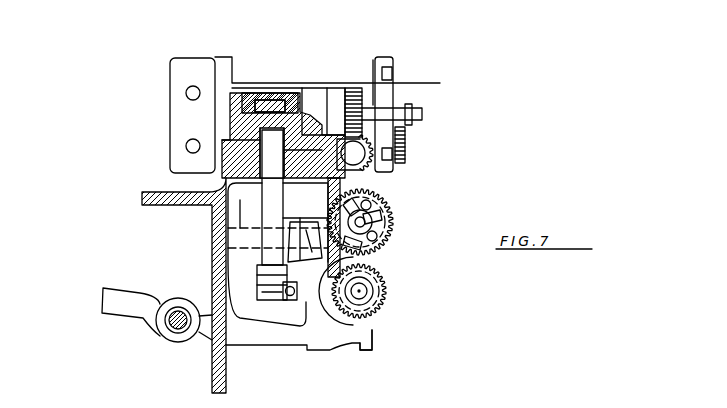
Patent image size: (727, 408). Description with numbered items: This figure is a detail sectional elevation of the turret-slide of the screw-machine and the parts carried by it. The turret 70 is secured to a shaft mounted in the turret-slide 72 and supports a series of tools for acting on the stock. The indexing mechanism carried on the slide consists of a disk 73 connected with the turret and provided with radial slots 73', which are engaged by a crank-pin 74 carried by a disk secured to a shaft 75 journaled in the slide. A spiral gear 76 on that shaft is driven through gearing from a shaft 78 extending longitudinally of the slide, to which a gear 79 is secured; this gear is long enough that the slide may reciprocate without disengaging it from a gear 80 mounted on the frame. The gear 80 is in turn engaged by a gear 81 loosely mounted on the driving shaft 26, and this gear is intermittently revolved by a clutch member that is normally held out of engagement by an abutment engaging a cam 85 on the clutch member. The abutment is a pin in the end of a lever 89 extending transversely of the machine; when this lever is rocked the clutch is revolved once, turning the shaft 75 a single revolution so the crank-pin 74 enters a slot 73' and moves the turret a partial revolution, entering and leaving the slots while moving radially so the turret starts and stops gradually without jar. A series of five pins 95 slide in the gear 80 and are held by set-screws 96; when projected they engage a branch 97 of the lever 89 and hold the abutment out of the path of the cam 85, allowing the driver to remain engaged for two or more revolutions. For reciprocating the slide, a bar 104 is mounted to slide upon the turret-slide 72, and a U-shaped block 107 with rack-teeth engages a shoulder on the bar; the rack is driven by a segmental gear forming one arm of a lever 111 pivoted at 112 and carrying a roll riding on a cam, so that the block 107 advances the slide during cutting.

The turret 70 is at (193, 72).
The turret-slide 72 is at (220, 180).
The disk 73 is at (395, 104).
The radial slots 73' is at (411, 111).
The crank-pin 74 is at (388, 116).
The shaft 75 is at (374, 60).
The spiral gear 76 is at (360, 88).
The shaft 78 is at (372, 166).
The gear 79 is at (375, 182).
The gear 80 is at (395, 223).
The gear 81 is at (384, 281).
The shaft 26 is at (362, 292).
The cam 85 is at (369, 325).
The lever 89 is at (273, 340).
The pins 95 is at (378, 237).
The set-screws 96 is at (383, 211).
The branch 97 is at (318, 268).
The bar 104 is at (272, 92).
The block 107 is at (285, 106).
The lever 111 is at (283, 214).
The pivot 112 is at (285, 243).